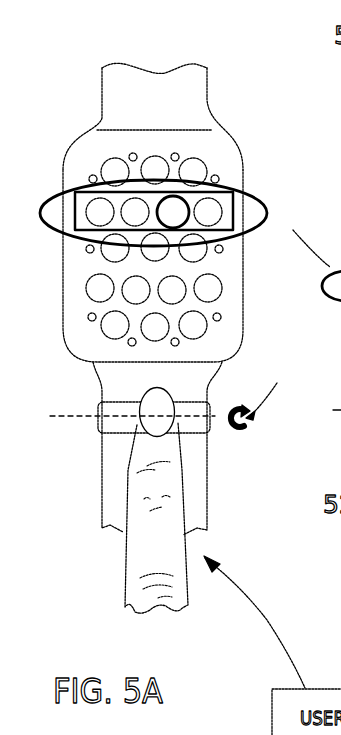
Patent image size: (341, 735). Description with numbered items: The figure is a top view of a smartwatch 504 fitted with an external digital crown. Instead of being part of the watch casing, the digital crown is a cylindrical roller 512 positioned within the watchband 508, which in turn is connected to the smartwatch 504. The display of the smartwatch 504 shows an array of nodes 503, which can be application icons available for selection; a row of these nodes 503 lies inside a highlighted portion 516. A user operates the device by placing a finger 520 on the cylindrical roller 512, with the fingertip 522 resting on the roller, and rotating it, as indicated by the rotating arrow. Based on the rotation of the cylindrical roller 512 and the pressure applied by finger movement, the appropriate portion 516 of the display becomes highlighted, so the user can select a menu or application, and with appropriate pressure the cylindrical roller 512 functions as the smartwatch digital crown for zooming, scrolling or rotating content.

The nodes 503 is at (152, 157).
The smartwatch 504 is at (232, 85).
The watchband 508 is at (128, 73).
The cylindrical roller 512 is at (113, 420).
The highlighted portion 516 is at (330, 267).
The finger 520 is at (170, 552).
The rotating crown 522 is at (178, 422).